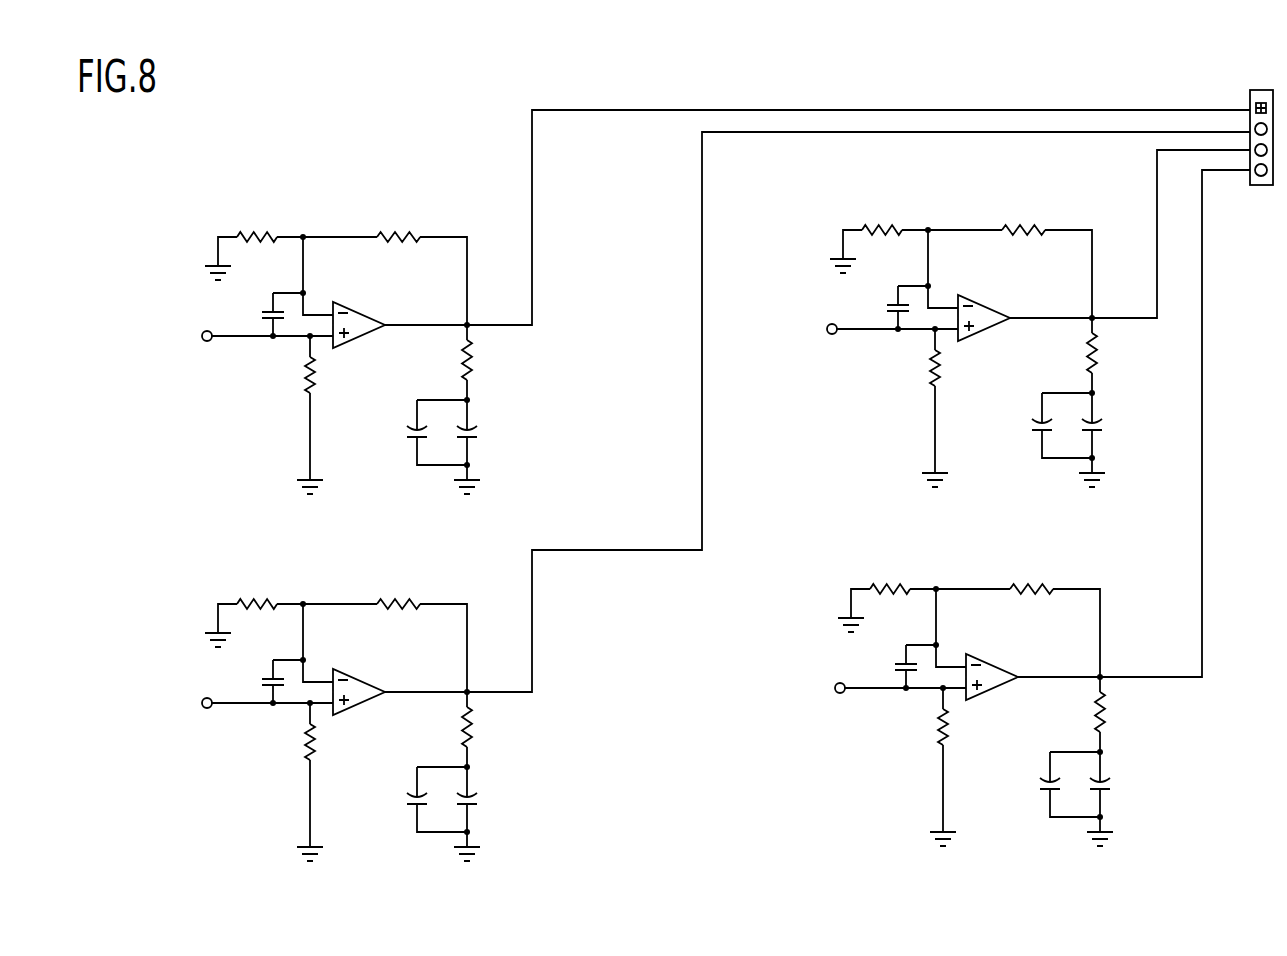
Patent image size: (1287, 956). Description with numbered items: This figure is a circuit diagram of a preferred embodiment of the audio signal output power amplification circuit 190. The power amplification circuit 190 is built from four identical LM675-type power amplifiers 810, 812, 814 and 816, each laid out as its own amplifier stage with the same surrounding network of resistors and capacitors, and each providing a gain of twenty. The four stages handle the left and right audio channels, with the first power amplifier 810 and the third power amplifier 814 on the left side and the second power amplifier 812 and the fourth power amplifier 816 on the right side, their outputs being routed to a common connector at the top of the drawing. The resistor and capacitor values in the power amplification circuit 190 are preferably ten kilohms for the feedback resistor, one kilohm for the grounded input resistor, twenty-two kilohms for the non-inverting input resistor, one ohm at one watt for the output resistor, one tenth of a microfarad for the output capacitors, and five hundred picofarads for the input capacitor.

The power amplification circuit 190 is at (647, 78).
The power amplifier 810 is at (346, 309).
The power amplifier 812 is at (1000, 303).
The power amplifier 814 is at (378, 677).
The power amplifier 816 is at (1009, 662).